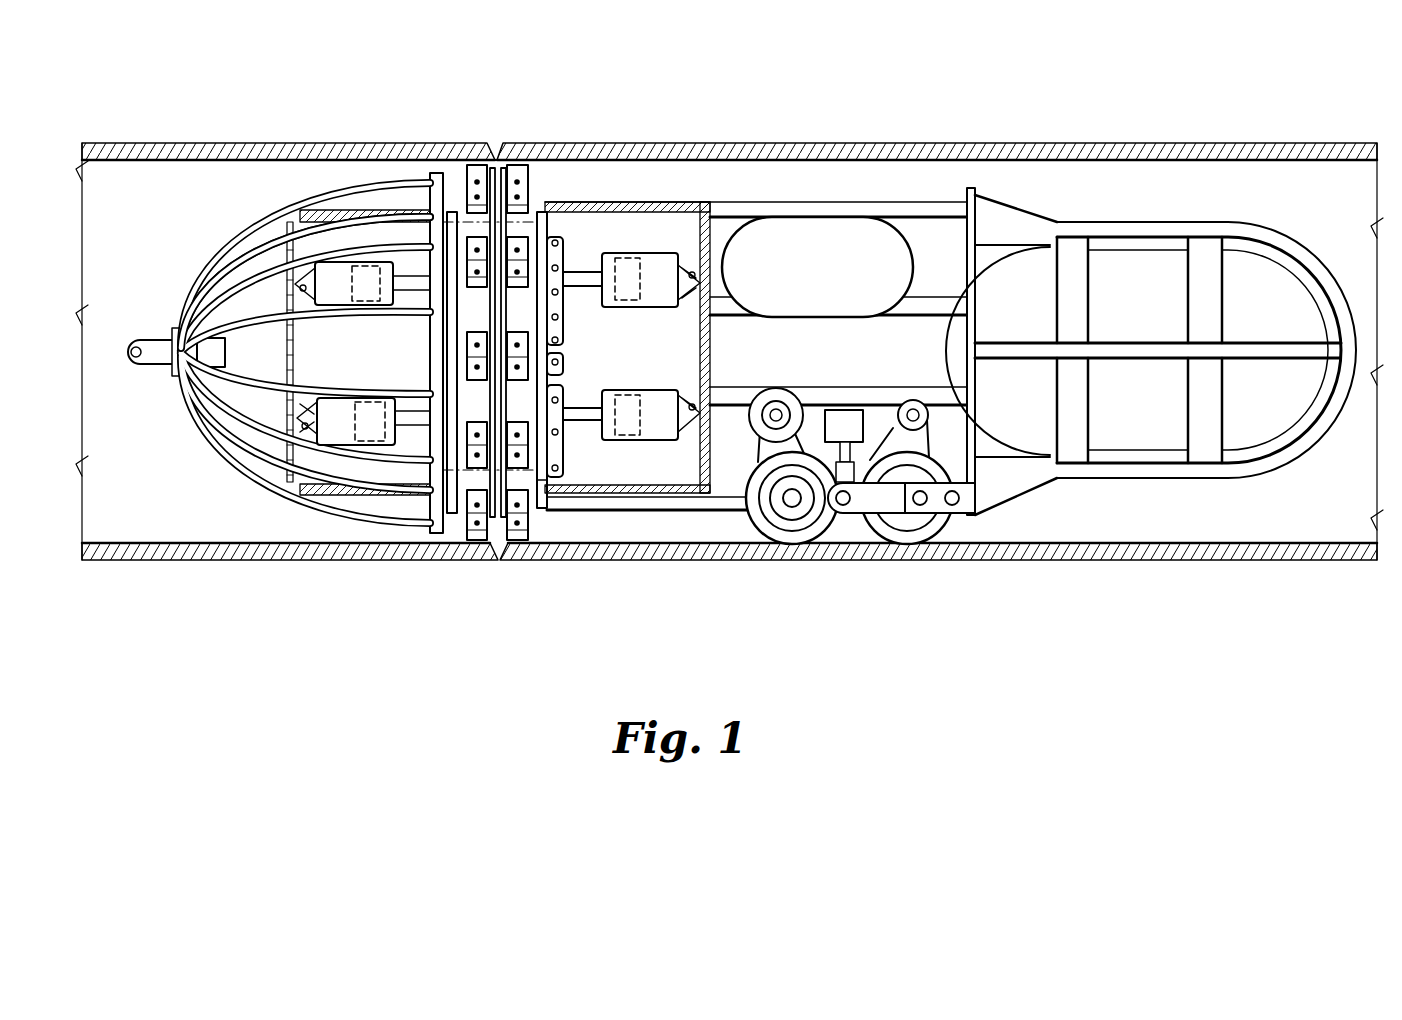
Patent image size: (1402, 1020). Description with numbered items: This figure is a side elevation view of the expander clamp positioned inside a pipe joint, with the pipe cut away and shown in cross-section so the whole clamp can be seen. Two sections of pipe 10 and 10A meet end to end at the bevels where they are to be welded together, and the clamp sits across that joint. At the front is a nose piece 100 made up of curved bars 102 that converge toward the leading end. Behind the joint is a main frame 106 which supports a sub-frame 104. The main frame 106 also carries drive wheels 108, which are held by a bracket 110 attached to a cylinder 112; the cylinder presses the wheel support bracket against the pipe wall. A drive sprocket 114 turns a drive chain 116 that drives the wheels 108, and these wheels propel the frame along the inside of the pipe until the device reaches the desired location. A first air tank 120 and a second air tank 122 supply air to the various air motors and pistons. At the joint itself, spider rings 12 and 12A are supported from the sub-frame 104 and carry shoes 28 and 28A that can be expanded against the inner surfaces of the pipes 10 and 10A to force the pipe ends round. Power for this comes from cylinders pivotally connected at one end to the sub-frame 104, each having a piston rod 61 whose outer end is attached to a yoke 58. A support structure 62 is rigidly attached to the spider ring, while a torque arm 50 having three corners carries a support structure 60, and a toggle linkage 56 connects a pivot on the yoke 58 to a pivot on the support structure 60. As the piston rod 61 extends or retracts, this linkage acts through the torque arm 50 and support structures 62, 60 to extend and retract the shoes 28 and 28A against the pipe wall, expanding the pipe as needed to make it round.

The pipe 10 is at (247, 143).
The pipe 10A is at (1020, 143).
The spider ring 12 is at (470, 226).
The spider ring 12A is at (521, 224).
The shoe 28 is at (484, 557).
The shoe 28A is at (525, 555).
The torque arm 50 is at (548, 227).
The second toggle linkage 56 is at (562, 377).
The yoke 58 is at (563, 427).
The support structure 60 is at (557, 353).
The piston rod 61 is at (577, 405).
The support structure 62 is at (547, 477).
The nose piece 100 is at (271, 353).
The curved bars 102 is at (237, 240).
The sub-frame 104 is at (700, 463).
The main frame 106 is at (866, 203).
The drive wheels 108 is at (893, 538).
The bracket 110 is at (818, 505).
The cylinder 112 is at (846, 410).
The drive sprocket 114 is at (773, 400).
The drive chain 116 is at (767, 450).
The first air tank 120 is at (835, 278).
The second air tank 122 is at (1257, 280).